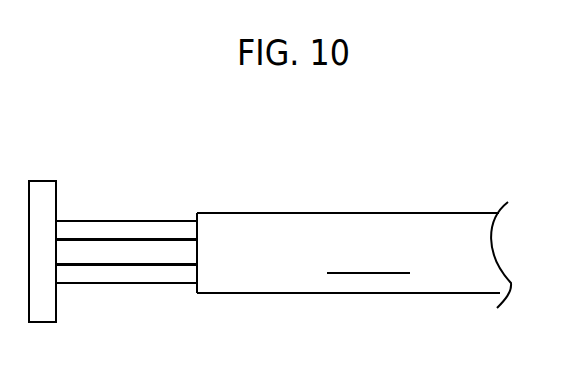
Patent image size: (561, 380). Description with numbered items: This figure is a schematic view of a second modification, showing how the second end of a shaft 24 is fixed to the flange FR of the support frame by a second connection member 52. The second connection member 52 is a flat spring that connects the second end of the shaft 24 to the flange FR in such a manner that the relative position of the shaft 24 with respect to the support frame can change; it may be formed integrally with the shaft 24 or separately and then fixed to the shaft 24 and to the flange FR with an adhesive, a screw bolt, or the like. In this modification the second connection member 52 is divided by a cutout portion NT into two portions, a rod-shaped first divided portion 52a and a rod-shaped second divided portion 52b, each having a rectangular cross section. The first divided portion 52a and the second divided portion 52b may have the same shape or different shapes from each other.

The flange FR is at (38, 192).
The shaft 24 is at (405, 222).
The second connection member 52 is at (126, 244).
The first divided portion 52a is at (77, 230).
The second divided portion 52b is at (168, 278).
The cutout portion NT is at (112, 249).